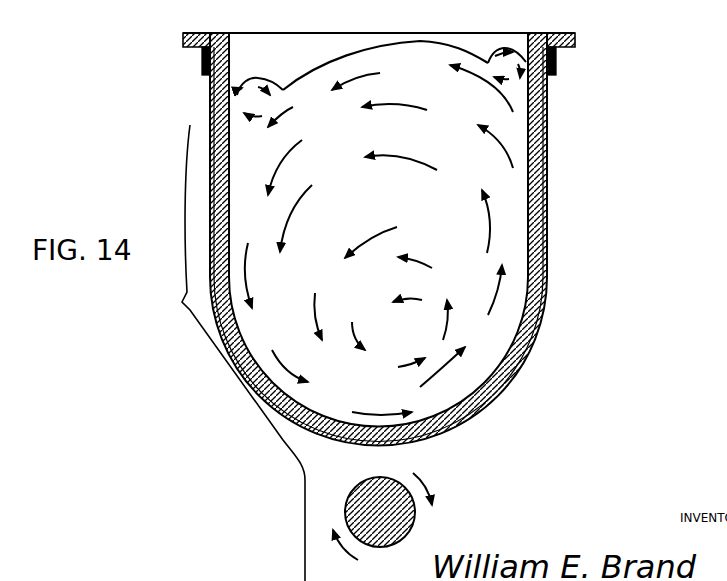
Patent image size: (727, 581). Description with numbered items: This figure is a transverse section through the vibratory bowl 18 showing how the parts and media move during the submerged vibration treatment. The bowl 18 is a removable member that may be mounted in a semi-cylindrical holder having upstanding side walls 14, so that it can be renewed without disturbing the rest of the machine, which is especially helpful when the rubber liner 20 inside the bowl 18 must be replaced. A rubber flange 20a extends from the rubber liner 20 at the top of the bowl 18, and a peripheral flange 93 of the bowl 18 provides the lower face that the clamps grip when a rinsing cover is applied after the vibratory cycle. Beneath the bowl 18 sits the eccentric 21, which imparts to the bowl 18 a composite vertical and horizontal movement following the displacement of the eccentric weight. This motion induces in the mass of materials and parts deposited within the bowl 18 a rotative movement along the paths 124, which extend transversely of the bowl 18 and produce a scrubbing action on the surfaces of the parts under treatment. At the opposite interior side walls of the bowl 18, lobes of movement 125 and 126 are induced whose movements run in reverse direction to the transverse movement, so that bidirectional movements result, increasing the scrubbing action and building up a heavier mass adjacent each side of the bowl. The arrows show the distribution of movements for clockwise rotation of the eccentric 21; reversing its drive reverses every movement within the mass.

The upstanding side walls 14 is at (352, 0).
The removable bowl 18 is at (210, 100).
The rubber liner 20 is at (229, 172).
The rubber flange 20a is at (566, 33).
The eccentric 21 is at (413, 527).
The peripheral flange 93 is at (204, 58).
The paths of mass movement 124 is at (473, 245).
The lobe of movement 125 is at (505, 50).
The lobe of movement 126 is at (258, 78).